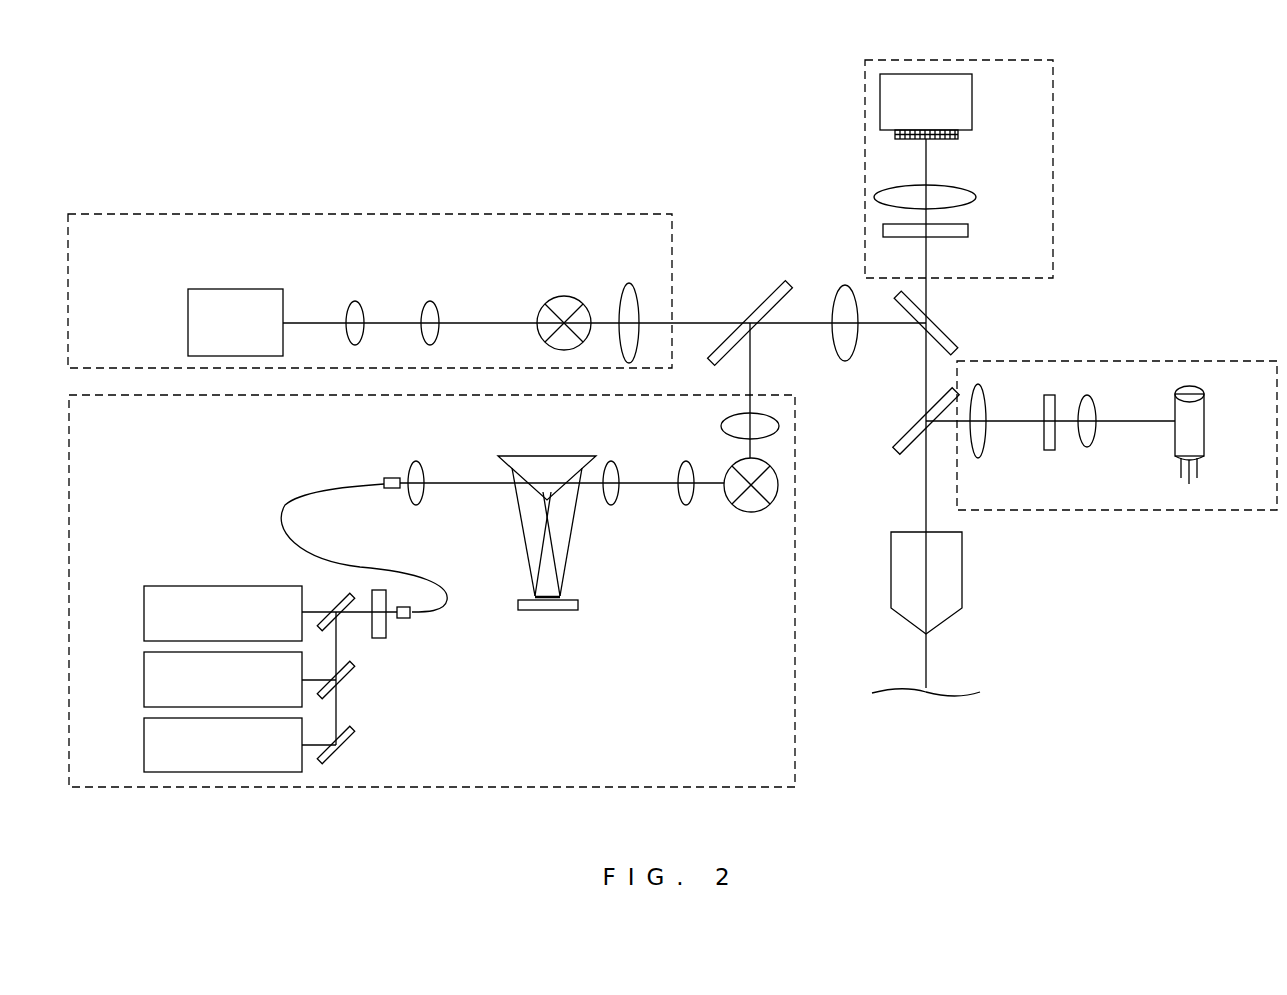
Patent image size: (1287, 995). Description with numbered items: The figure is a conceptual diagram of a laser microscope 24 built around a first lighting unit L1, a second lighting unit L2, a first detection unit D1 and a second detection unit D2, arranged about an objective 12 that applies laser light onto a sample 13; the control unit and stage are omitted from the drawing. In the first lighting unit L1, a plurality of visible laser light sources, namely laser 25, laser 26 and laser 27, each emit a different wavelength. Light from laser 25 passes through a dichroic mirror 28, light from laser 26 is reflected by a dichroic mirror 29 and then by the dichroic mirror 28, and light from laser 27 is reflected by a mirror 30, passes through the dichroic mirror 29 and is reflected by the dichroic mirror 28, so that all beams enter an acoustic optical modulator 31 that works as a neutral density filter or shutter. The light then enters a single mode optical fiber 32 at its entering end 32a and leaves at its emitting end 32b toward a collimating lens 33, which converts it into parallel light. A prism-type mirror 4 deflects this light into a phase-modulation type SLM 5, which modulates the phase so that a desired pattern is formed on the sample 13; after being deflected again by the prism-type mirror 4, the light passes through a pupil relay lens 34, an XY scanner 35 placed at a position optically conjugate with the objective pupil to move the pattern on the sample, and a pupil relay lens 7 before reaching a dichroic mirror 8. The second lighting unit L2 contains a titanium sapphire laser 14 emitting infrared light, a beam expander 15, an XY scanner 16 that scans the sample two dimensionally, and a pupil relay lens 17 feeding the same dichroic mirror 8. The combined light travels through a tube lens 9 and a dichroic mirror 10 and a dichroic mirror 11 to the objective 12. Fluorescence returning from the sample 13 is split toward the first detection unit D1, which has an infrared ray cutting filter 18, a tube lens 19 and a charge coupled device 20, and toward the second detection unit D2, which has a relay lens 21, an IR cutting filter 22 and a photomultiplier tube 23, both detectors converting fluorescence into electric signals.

The prism-type mirror 4 is at (540, 466).
The phase-modulation type SLM 5 is at (545, 612).
The pupil relay lens 7 is at (728, 428).
The dichroic mirror 8 is at (775, 285).
The tube lens 9 is at (842, 300).
The dichroic mirror 10 is at (939, 317).
The dichroic mirror 11 is at (906, 428).
The objective 12 is at (906, 580).
The sample 13 is at (953, 690).
The titanium sapphire laser 14 is at (233, 302).
The beam expander 15 is at (455, 297).
The XY scanner 16 is at (561, 298).
The pupil relay lens 17 is at (627, 294).
The infrared ray cutting filter 18 is at (964, 234).
The tube lens 19 is at (962, 200).
The charge coupled device 20 is at (962, 105).
The relay lens 21 is at (1113, 463).
The IR cutting filter 22 is at (1047, 408).
The photomultiplier tube 23 is at (1194, 429).
The laser microscope 24 is at (1243, 68).
The laser 25 is at (148, 612).
The laser 26 is at (148, 680).
The laser 27 is at (148, 745).
The dichroic mirror 28 is at (346, 597).
The dichroic mirror 29 is at (348, 686).
The mirror 30 is at (348, 750).
The acoustic optical modulator 31 is at (380, 635).
The single mode optical fiber 32 is at (282, 505).
The entering end 32a is at (410, 620).
The emitting end 32b is at (390, 478).
The collimating lens 33 is at (416, 466).
The pupil relay lens 34 is at (698, 513).
The XY scanner 35 is at (752, 506).
The first lighting unit L1 is at (800, 750).
The second lighting unit L2 is at (400, 214).
The first detection unit D1 is at (1053, 163).
The second detection unit D2 is at (1128, 512).